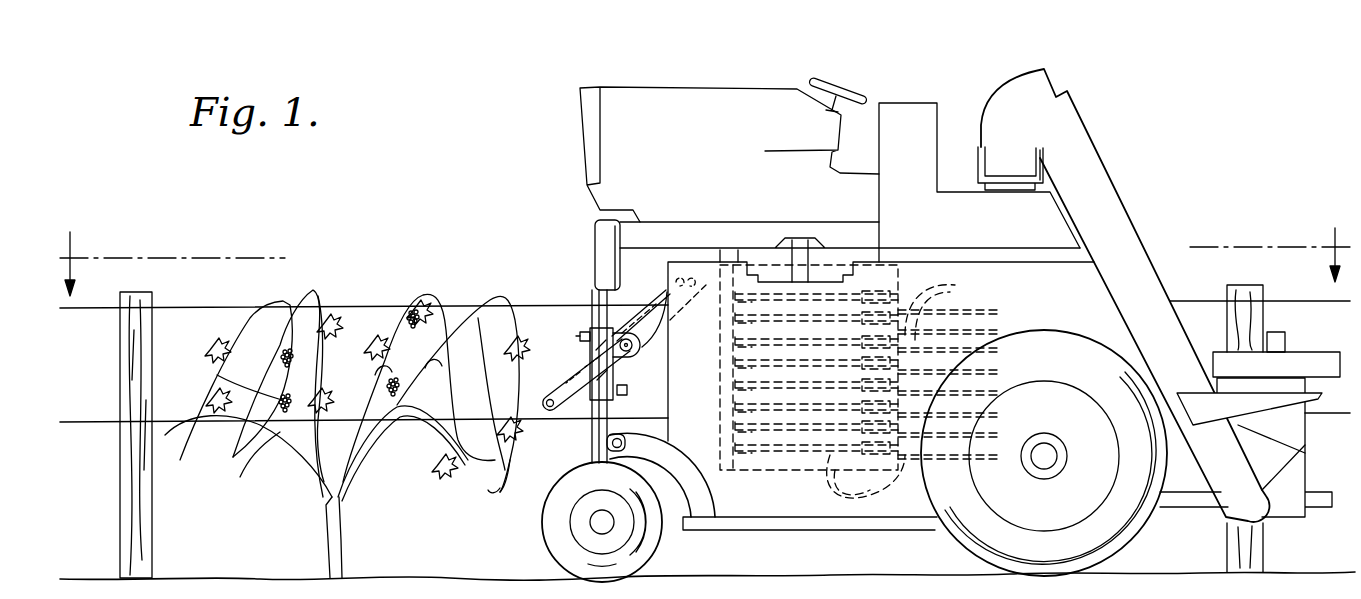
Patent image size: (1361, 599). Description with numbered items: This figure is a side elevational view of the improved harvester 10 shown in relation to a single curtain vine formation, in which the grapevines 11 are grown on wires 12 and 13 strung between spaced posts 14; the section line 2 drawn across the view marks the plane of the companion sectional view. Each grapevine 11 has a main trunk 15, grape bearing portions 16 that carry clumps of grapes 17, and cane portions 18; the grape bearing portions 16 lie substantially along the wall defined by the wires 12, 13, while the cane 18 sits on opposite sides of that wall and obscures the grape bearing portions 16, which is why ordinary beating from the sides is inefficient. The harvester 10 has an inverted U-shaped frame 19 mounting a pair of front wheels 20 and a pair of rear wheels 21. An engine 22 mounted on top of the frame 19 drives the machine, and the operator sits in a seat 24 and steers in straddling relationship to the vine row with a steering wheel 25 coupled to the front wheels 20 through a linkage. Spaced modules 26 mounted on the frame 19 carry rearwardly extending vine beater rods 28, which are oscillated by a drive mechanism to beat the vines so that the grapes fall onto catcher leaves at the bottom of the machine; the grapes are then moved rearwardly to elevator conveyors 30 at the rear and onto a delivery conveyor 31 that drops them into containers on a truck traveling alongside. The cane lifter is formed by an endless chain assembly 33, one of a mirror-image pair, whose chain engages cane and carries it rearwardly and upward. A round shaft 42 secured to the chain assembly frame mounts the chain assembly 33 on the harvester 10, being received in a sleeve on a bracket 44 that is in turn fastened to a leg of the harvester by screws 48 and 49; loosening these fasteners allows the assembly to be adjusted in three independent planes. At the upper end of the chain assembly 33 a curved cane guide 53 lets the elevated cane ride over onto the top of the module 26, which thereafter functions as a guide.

The section line 2- 2 is at (696, 259).
The harvester 10 is at (1104, 92).
The grapevine 11 is at (346, 417).
The wire 12 is at (380, 322).
The wire 13 is at (104, 422).
The post 14 is at (120, 484).
The main trunk 15 is at (345, 498).
The grape bearing portion 16 is at (321, 404).
The clumps of grapes 17 is at (284, 357).
The cane portion 18 is at (480, 475).
The frame 19 is at (597, 230).
The front wheel 20 is at (546, 522).
The rear wheel 21 is at (1124, 540).
The engine 22 is at (672, 74).
The seat 24 is at (916, 104).
The steering wheel 25 is at (832, 78).
The module 26 is at (690, 372).
The vine beater rod 28 is at (861, 392).
The elevator conveyor 30 is at (1222, 452).
The delivery conveyor 31 is at (978, 158).
The endless chain assembly 33 is at (560, 420).
The round shaft 42 is at (636, 346).
The bracket 44 is at (596, 366).
The screw 48 is at (583, 332).
The screw 49 is at (630, 392).
The cane guide 53 is at (626, 302).